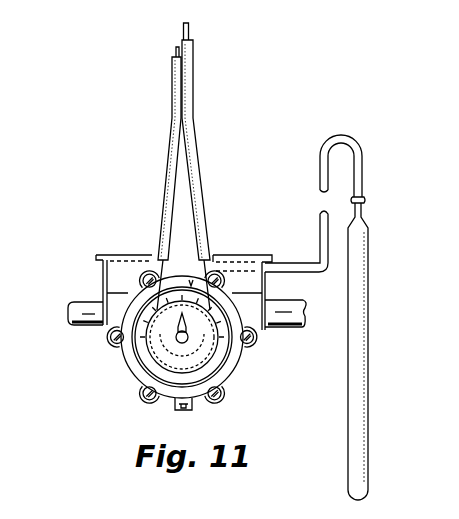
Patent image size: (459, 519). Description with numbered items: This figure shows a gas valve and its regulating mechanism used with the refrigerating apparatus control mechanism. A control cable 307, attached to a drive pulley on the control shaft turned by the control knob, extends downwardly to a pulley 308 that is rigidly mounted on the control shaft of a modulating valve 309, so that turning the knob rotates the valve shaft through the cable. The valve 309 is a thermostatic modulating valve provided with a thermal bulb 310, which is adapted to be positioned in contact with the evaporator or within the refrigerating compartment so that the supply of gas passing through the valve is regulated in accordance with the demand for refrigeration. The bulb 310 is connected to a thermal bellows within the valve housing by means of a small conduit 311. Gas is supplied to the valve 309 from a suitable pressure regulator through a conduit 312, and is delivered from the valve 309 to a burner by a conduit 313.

The control cable 307 is at (178, 80).
The pulley 308 is at (156, 355).
The modulating valve 309 is at (232, 375).
The thermal bulb 310 is at (362, 333).
The small conduit 311 is at (320, 232).
The conduit 312 is at (272, 308).
The conduit 313 is at (85, 305).